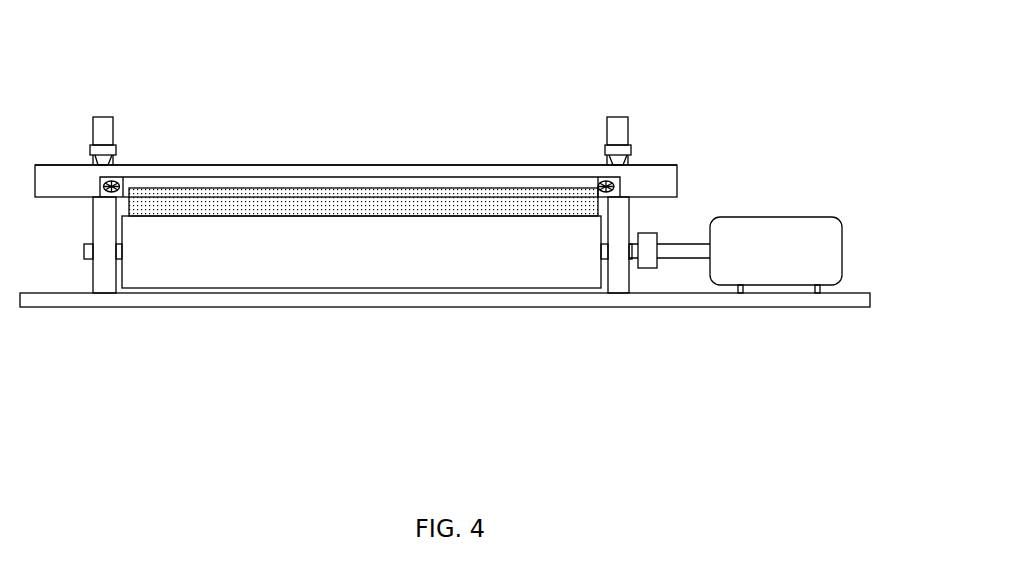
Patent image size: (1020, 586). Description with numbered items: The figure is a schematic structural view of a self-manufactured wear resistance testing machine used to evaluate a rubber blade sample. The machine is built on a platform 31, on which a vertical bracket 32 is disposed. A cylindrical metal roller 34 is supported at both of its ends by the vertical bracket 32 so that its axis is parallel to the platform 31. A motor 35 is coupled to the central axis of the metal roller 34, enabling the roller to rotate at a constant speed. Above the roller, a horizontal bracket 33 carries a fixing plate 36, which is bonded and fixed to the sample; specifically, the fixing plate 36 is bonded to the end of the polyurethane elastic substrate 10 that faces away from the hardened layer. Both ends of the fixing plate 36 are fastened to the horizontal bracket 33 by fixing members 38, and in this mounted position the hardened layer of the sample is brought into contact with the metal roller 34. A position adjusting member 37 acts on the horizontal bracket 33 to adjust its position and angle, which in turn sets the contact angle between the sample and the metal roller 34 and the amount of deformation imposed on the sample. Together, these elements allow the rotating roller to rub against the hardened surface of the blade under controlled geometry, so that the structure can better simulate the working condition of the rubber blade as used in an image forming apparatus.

The polyurethane elastic substrate 10 is at (393, 193).
The platform 31 is at (860, 290).
The vertical bracket 32 is at (620, 270).
The horizontal bracket 33 is at (663, 172).
The cylindrical metal roller 34 is at (555, 270).
The motor 35 is at (773, 227).
The fixing plate 36 is at (245, 177).
The position adjusting member 37 is at (622, 117).
The fixing member 38 is at (612, 183).